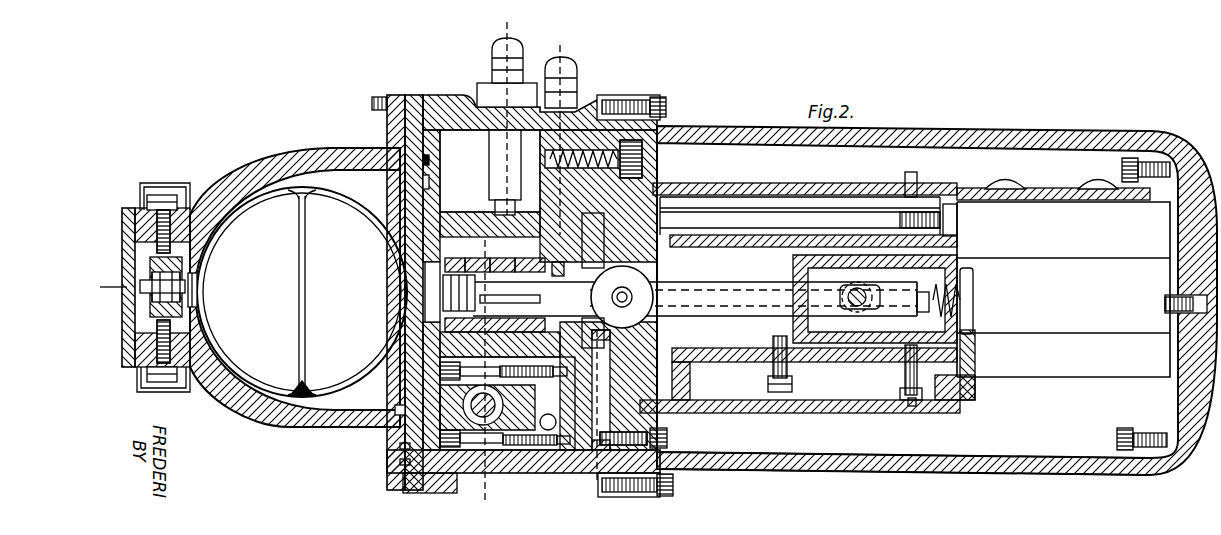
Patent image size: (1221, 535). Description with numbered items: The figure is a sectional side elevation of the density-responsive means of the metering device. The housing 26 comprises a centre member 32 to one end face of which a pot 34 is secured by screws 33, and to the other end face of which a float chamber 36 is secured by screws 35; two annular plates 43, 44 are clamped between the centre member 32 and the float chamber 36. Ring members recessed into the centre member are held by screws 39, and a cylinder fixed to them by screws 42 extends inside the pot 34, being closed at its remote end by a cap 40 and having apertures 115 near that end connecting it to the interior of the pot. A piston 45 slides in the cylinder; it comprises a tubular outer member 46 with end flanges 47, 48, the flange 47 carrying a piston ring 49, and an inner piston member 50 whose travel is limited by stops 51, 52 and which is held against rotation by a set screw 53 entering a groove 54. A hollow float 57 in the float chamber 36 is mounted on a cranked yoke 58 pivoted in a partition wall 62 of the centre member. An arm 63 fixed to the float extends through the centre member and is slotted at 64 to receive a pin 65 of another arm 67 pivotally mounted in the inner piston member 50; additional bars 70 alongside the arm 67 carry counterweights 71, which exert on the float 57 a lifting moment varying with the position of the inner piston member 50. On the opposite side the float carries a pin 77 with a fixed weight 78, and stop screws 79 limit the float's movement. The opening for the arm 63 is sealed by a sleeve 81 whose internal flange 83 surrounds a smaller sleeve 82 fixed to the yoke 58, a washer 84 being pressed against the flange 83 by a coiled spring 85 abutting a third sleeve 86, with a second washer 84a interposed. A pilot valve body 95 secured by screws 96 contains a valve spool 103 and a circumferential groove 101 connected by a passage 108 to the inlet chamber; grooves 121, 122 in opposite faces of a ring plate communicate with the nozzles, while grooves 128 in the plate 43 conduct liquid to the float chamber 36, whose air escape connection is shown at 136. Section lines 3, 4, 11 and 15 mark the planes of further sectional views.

The section line 3- 3 is at (105, 287).
The plunger knob / section line 4- 4 is at (509, 38).
The section line 11-11 / screw 11 is at (600, 362).
The knob / section line 15 is at (562, 47).
The housing 26 is at (658, 96).
The centre member 32 is at (582, 110).
The screws 33 is at (668, 110).
The pot 34 is at (766, 131).
The screws 35 is at (380, 97).
The float chamber 36 is at (315, 148).
The screws 39 is at (660, 162).
The cap 40 is at (1168, 228).
The screws 42 is at (668, 437).
The annular plate 43 is at (418, 95).
The annular plate 44 is at (397, 95).
The piston 45 is at (858, 374).
The tubular outer member 46 is at (878, 242).
The flange 47 is at (690, 372).
The flange 48 is at (952, 395).
The piston ring 49 is at (682, 401).
The inner piston member 50 is at (874, 363).
The stop 51 is at (773, 337).
The stop 52 is at (977, 355).
The set screw 53 is at (912, 402).
The groove 54 is at (968, 330).
The hollow float 57 is at (262, 186).
The cranked yoke 58 is at (434, 245).
The partition wall 62 is at (470, 212).
The arm 63 is at (595, 326).
The slot 64 is at (582, 272).
The pin 65 is at (480, 297).
The arm 67 is at (742, 283).
The bars 70 is at (745, 305).
The counterweight 71 is at (650, 290).
The pin 77 is at (190, 285).
The fixed weight 78 is at (198, 305).
The stop screws 79 is at (192, 188).
The sleeve 81 is at (522, 260).
The sleeve 82 is at (452, 260).
The internal flange 83 is at (474, 260).
The washer 84 is at (498, 260).
The second washer 84a is at (478, 325).
The coiled spring 85 is at (520, 296).
The third sleeve 86 is at (568, 266).
The pilot valve body 95 is at (512, 447).
The screws 96 is at (470, 447).
The circumferential groove 101 is at (400, 446).
The valve spool 103 is at (400, 462).
The passage 108 is at (548, 432).
The apertures 115 is at (1085, 186).
The groove 121 is at (602, 400).
The groove 122 is at (604, 380).
The grooves 128 is at (428, 183).
The air escape connection 136 is at (428, 163).